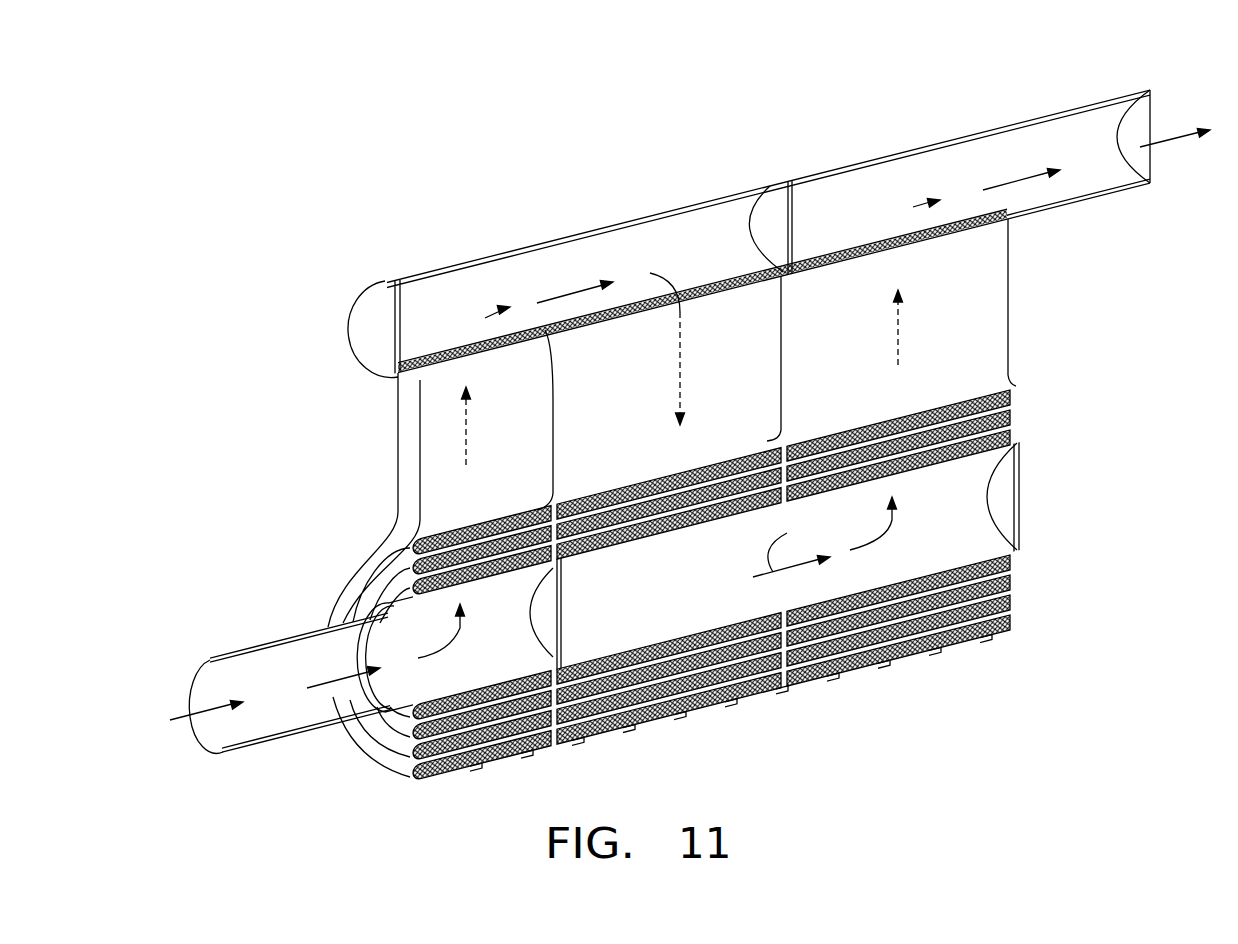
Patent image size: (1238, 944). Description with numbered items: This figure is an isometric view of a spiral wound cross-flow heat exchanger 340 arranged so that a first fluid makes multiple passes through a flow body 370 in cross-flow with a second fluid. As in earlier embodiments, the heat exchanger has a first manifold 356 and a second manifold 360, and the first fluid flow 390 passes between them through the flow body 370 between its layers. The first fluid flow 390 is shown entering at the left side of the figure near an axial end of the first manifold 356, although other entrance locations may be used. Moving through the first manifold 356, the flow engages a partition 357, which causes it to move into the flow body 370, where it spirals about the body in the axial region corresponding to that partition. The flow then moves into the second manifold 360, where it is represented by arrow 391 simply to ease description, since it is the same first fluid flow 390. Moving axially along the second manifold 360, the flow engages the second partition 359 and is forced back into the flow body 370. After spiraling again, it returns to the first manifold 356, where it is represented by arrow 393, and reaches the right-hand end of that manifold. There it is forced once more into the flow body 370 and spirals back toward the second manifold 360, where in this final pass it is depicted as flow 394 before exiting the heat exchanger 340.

The spiral wound cross-flow heat exchanger 340 is at (405, 150).
The first manifold 356 is at (223, 723).
The partition 357 is at (543, 628).
The second partition 359 is at (766, 214).
The second manifold 360 is at (1065, 103).
The flow body 370 is at (370, 767).
The first fluid flow 390 is at (330, 680).
The arrow 391 is at (563, 293).
The arrow 393 is at (898, 340).
The flow 394 is at (897, 233).